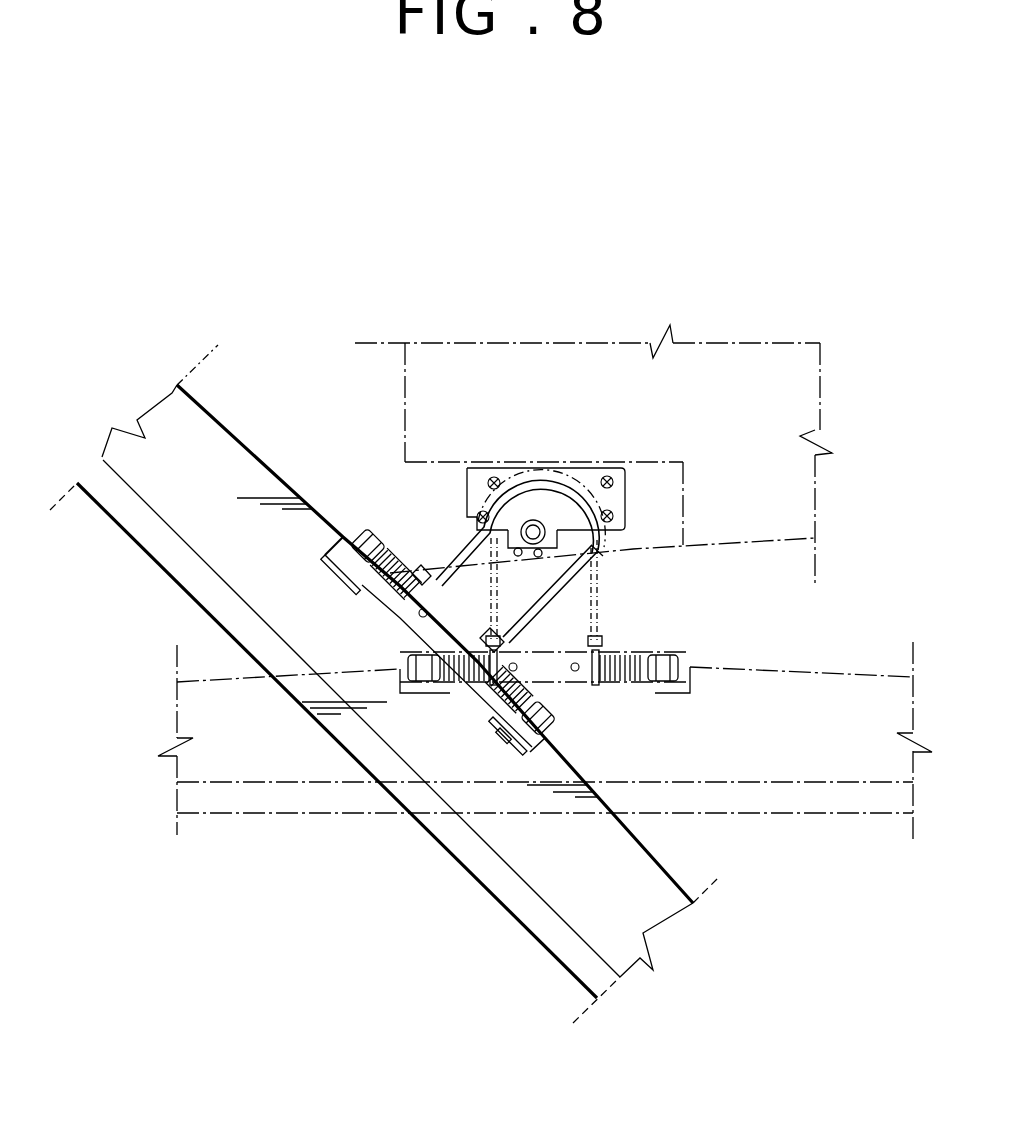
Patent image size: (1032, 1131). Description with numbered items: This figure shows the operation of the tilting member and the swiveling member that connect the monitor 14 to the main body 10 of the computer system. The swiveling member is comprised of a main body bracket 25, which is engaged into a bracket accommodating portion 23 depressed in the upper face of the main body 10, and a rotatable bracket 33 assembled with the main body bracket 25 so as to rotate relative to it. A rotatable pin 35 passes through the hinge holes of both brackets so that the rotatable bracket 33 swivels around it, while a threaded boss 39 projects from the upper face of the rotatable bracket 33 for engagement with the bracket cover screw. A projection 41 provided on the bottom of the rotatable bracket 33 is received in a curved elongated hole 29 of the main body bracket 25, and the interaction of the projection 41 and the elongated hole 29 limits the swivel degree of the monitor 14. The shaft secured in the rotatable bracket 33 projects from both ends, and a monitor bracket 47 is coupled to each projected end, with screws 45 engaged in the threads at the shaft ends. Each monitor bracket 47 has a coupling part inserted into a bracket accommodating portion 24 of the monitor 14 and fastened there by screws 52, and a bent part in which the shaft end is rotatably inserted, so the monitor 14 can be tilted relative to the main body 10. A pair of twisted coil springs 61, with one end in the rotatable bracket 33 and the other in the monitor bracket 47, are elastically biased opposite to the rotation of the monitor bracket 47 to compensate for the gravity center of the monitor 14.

The main body 10 is at (706, 352).
The monitor 14 is at (620, 497).
The bracket accommodating portion 23 is at (648, 463).
The bracket accommodating portion 24 is at (328, 553).
The main body bracket 25 is at (572, 468).
The elongated hole 29 is at (600, 541).
The rotatable bracket 33 is at (553, 580).
The rotatable pin 35 is at (530, 522).
The boss 39 is at (432, 512).
The projection 41 is at (600, 557).
The screws 45 is at (366, 537).
The monitor bracket 47 is at (337, 566).
The screws 52 is at (505, 731).
The twisted coil spring 61 is at (375, 598).